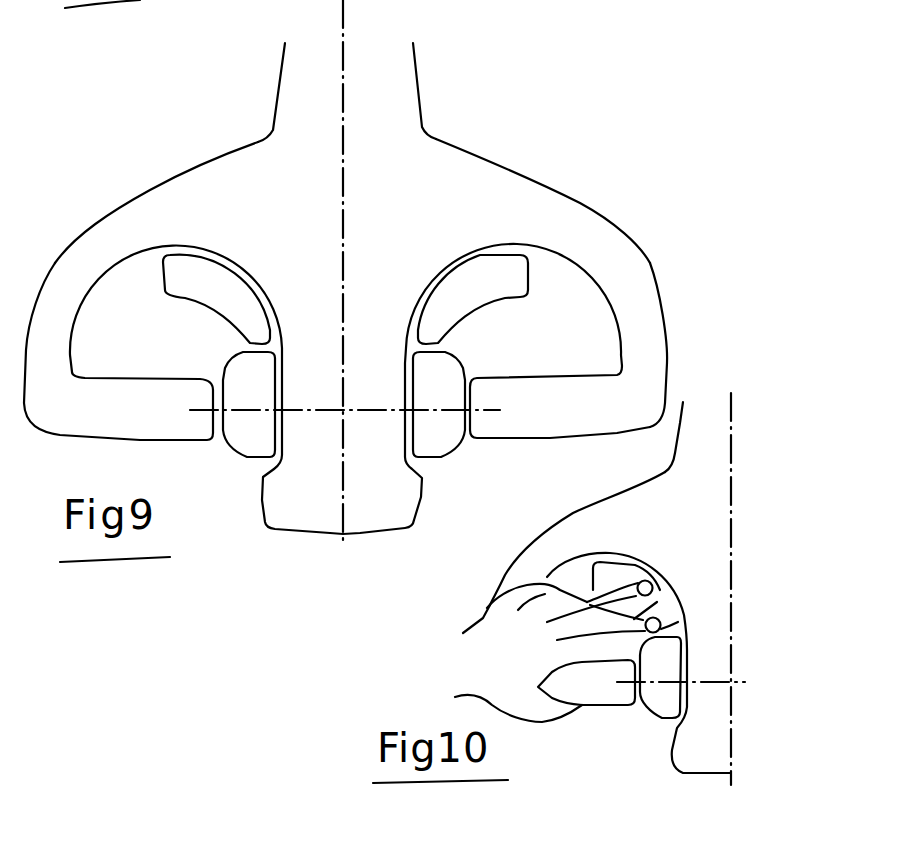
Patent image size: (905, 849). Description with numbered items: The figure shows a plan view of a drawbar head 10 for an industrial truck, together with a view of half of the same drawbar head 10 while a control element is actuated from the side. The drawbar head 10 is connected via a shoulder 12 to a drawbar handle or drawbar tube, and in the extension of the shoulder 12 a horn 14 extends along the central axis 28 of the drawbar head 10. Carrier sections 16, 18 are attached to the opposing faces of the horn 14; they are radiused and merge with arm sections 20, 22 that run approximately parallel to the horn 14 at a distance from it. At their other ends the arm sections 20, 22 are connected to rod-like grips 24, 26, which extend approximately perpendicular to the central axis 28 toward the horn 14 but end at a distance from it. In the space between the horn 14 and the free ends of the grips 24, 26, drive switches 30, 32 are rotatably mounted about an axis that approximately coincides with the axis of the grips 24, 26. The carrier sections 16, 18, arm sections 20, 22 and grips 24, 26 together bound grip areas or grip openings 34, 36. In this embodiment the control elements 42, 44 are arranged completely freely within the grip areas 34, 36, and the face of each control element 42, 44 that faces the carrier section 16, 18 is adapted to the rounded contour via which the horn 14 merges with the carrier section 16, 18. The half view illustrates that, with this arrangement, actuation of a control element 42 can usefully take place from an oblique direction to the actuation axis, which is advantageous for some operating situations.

In FIG. 9, the drawbar head 10 is at (540, 152).
In FIG. 10, the drawbar head 10 is at (753, 459).
In FIG. 9, the shoulder 12 is at (340, 118).
In FIG. 10, the shoulder 12 is at (720, 462).
In FIG. 9, the horn 14 is at (330, 340).
In FIG. 10, the horn 14 is at (728, 745).
In FIG. 9, the carrier section 16 is at (183, 224).
In FIG. 10, the carrier section 16 is at (640, 537).
In FIG. 9, the carrier section 18 is at (548, 227).
In FIG. 9, the arm section 20 is at (70, 340).
In FIG. 10, the arm section 20 is at (540, 578).
In FIG. 9, the arm section 22 is at (660, 333).
In FIG. 9, the grip 24 is at (157, 426).
In FIG. 10, the grip 24 is at (605, 698).
In FIG. 9, the grip 26 is at (593, 425).
In FIG. 9, the central axis 28 is at (350, 213).
In FIG. 10, the central axis 28 is at (735, 499).
In FIG. 9, the drive switch 30 is at (270, 398).
In FIG. 10, the drive switch 30 is at (672, 668).
In FIG. 9, the drive switch 32 is at (450, 400).
In FIG. 9, the grip area 34 is at (130, 333).
In FIG. 9, the grip area 36 is at (583, 352).
In FIG. 9, the control element 42 is at (233, 303).
In FIG. 10, the control element 42 is at (658, 602).
In FIG. 9, the control element 44 is at (493, 303).